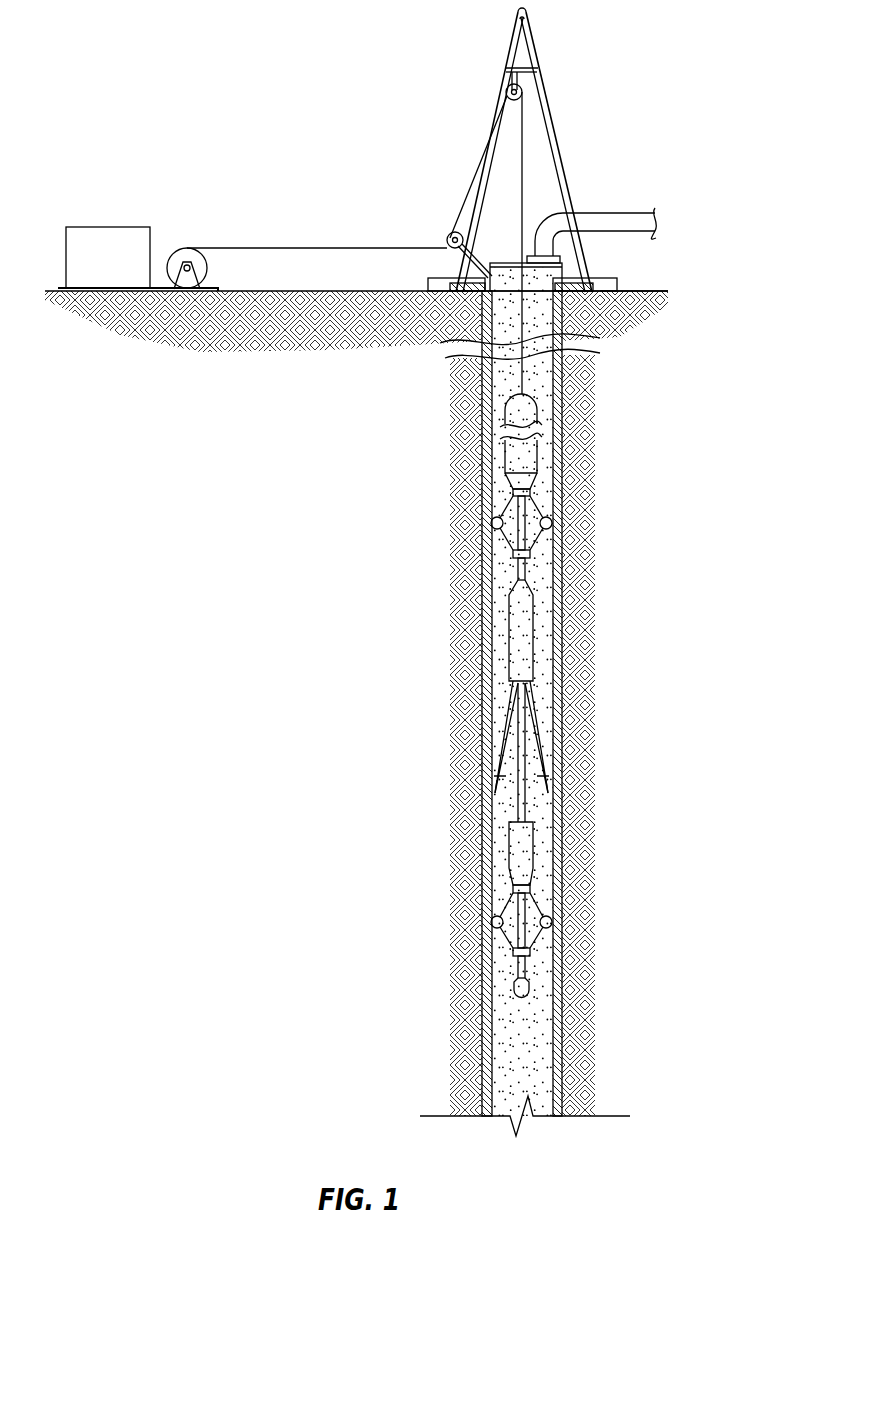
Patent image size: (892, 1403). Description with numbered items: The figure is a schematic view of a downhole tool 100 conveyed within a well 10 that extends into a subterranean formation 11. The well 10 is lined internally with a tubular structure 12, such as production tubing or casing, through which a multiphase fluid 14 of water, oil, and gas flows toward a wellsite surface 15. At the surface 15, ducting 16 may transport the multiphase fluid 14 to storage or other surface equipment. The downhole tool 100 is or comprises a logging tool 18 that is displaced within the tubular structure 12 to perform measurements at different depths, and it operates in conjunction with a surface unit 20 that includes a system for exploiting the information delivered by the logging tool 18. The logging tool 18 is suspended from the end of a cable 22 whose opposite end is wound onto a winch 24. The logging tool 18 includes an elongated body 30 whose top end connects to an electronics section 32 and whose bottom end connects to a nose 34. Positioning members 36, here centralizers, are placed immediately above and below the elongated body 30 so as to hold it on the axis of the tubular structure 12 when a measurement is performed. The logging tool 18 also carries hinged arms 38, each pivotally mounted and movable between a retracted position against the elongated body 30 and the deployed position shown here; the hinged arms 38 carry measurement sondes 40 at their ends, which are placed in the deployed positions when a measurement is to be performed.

The downhole tool 100 is at (404, 572).
The well 10 is at (549, 388).
The subterranean formation 11 is at (292, 336).
The tubular structure 12 is at (556, 540).
The multiphase fluid 14 is at (541, 618).
The wellsite surface 15 is at (637, 292).
The ducting 16 is at (611, 213).
The logging tool 18 is at (503, 657).
The surface unit 20 is at (108, 227).
The cable 22 is at (523, 110).
The winch 24 is at (185, 247).
The elongated body 30 is at (520, 622).
The electronics section 32 is at (516, 408).
The nose 34 is at (530, 990).
The positioning members 36 is at (500, 512).
The hinged arms 38 is at (505, 738).
The measurement sondes 40 is at (498, 777).